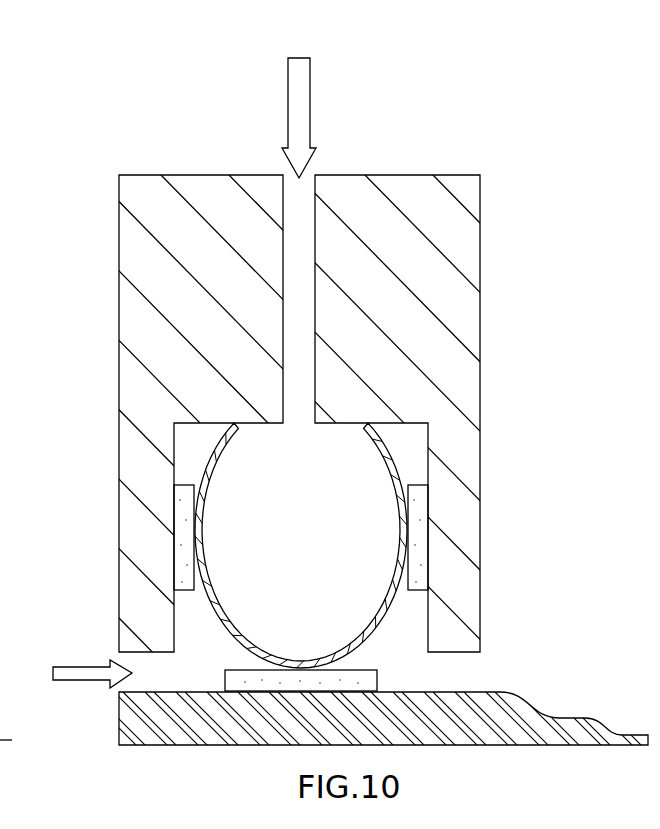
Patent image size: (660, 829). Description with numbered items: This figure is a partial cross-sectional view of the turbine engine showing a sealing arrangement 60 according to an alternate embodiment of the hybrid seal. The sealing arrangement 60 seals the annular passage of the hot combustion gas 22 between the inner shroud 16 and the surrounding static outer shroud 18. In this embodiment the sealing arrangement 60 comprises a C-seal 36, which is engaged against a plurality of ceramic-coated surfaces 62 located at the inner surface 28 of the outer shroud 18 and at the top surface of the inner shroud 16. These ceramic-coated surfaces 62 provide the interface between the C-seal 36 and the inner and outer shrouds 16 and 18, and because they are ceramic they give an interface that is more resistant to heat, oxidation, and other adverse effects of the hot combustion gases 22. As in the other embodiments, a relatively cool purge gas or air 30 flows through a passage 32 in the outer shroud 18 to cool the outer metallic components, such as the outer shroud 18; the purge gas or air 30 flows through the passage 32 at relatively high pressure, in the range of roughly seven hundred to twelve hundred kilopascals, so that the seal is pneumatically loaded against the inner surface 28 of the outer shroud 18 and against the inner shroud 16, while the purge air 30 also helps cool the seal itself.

The sealing arrangement 60 is at (540, 66).
The purge gas or air 30 is at (311, 100).
The passage 32 is at (293, 382).
The inner surface 28 is at (174, 454).
The outer shroud 18 is at (469, 395).
The C-seal 36 is at (265, 656).
The ceramic-coated surfaces 62 is at (378, 682).
The inner shroud 16 is at (207, 746).
The hot combustion gas 22 is at (90, 682).